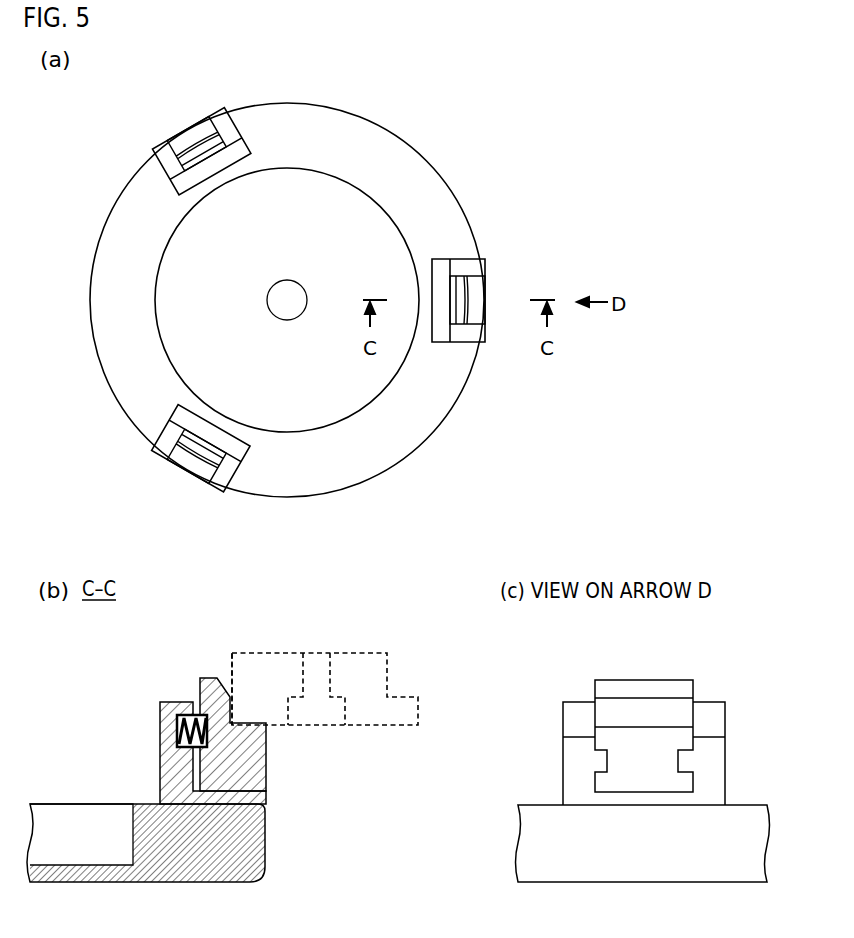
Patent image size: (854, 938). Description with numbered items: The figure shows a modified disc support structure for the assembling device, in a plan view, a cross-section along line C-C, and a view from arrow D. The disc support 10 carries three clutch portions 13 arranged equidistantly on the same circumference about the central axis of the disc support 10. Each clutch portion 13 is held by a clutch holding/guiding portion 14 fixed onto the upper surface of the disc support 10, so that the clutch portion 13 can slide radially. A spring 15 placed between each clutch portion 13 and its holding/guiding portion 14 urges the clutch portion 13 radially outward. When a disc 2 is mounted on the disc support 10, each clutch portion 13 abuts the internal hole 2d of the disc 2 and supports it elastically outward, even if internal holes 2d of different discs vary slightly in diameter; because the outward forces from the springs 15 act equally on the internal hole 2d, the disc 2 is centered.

The disc 2 is at (372, 657).
The internal hole 2d is at (230, 660).
The disc support 10 is at (423, 168).
The clutch portion 13 is at (180, 134).
The clutch holding/guiding portion 14 is at (154, 144).
The spring 15 is at (193, 718).